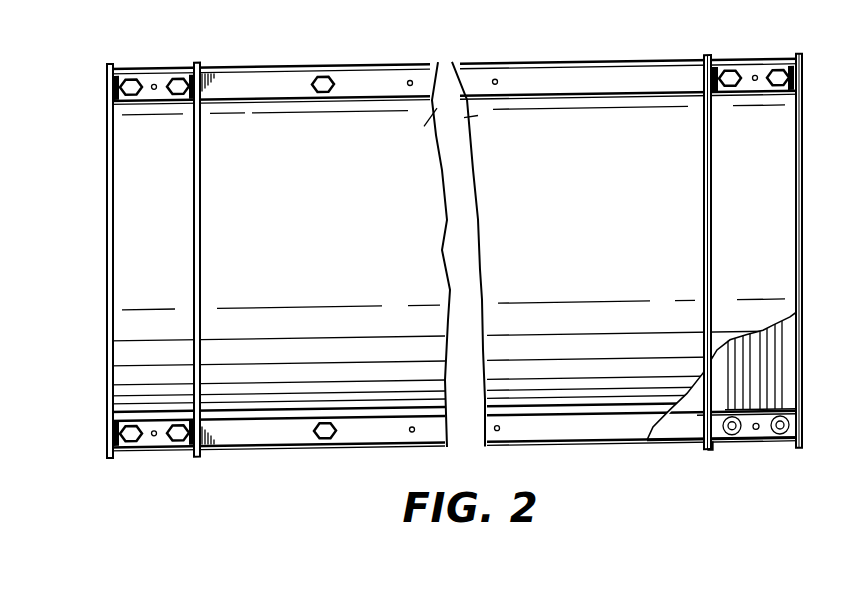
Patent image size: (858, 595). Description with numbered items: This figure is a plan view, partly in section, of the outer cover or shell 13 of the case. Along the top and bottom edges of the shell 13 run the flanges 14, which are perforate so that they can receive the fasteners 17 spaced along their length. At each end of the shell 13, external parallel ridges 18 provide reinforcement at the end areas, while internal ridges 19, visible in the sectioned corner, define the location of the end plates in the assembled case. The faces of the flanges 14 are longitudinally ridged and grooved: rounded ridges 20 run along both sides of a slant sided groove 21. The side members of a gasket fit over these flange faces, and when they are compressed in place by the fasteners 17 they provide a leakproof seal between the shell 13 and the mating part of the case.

The shell 13 is at (443, 67).
The flange 14 is at (647, 70).
The fastener 17 is at (325, 79).
The external parallel ridge 18 is at (796, 218).
The internal ridge 19 is at (737, 402).
The rounded ridge 20 is at (681, 453).
The slant sided groove 21 is at (704, 440).